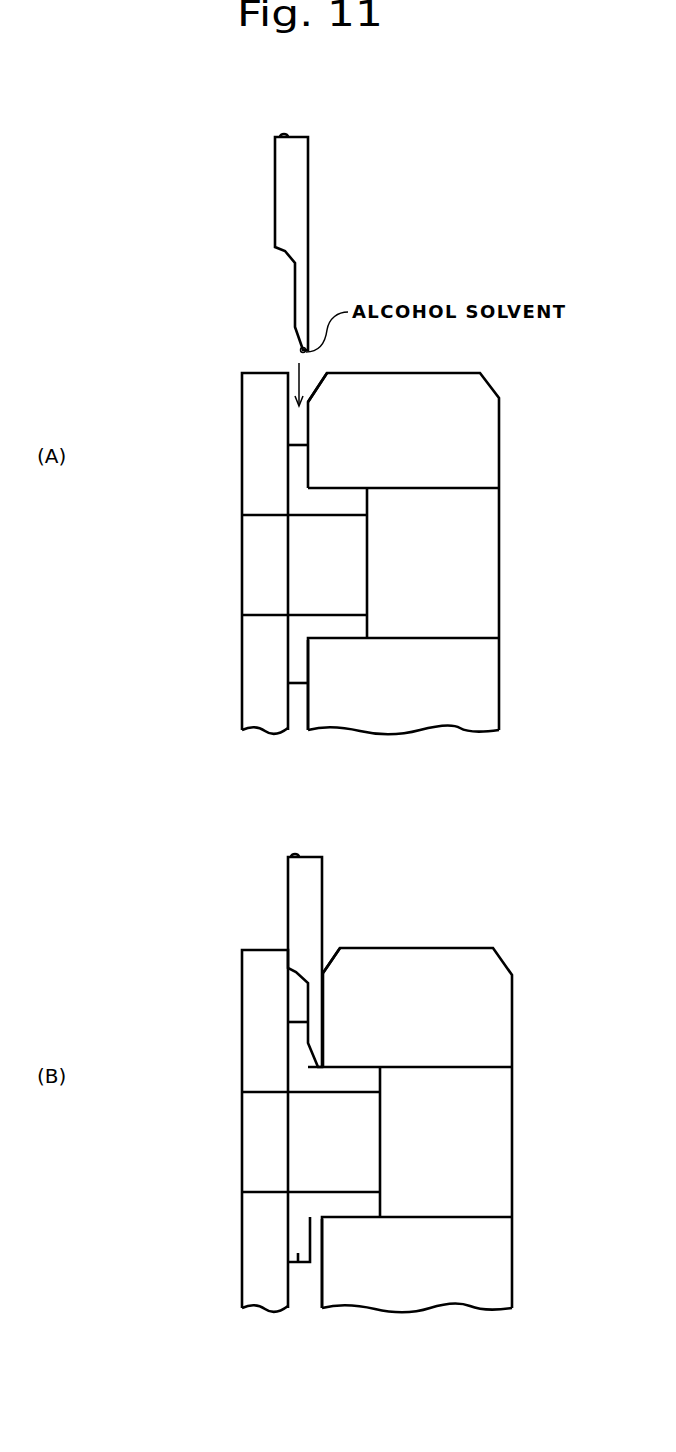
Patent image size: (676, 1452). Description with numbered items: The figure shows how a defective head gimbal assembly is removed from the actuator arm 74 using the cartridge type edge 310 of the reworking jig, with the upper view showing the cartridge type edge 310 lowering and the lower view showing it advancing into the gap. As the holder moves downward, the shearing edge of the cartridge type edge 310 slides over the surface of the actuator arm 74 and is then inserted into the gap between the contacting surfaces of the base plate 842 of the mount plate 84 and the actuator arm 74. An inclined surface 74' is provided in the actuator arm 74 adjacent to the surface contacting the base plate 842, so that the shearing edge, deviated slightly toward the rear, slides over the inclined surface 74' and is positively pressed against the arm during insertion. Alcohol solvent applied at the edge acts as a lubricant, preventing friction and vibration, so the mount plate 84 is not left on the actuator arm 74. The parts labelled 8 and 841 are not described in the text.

The cartridge type edge 310 is at (300, 190).
The chip 8 is at (258, 423).
The actuator arm 74 is at (448, 842).
The inclined surface 74' is at (374, 655).
The mount plate 84 is at (284, 636).
The base plate 842 is at (300, 684).
The upper gap portion 841 is at (357, 625).